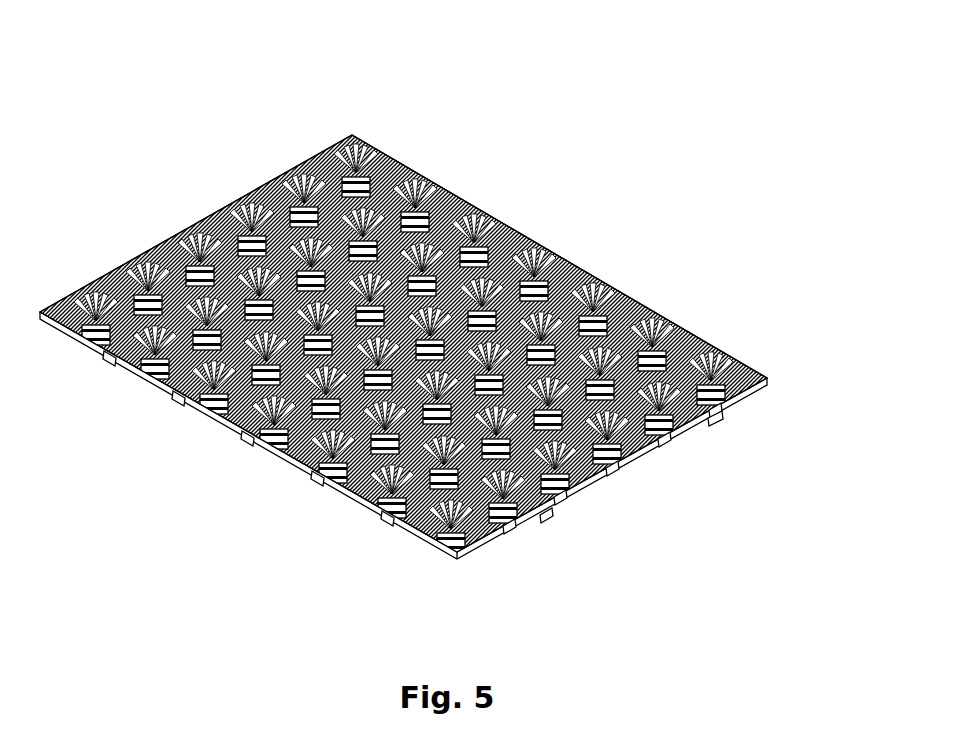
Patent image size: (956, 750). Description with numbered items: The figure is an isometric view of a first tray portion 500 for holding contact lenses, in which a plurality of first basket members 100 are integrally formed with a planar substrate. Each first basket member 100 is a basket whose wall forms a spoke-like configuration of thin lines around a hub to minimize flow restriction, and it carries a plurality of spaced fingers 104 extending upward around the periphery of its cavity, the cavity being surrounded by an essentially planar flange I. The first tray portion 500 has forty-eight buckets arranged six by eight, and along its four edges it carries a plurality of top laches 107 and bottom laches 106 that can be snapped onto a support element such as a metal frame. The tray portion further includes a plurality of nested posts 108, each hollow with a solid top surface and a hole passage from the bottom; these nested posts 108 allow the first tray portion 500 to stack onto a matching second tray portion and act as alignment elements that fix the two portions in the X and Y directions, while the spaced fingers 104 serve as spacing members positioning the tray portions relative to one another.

The first basket member 100 is at (279, 160).
The first tray portion 500 is at (545, 214).
The spaced fingers 104 is at (640, 286).
The bottom laches 106 is at (715, 445).
The top laches 107 is at (718, 414).
The nested posts 108 is at (112, 370).
The planar flange I is at (550, 516).